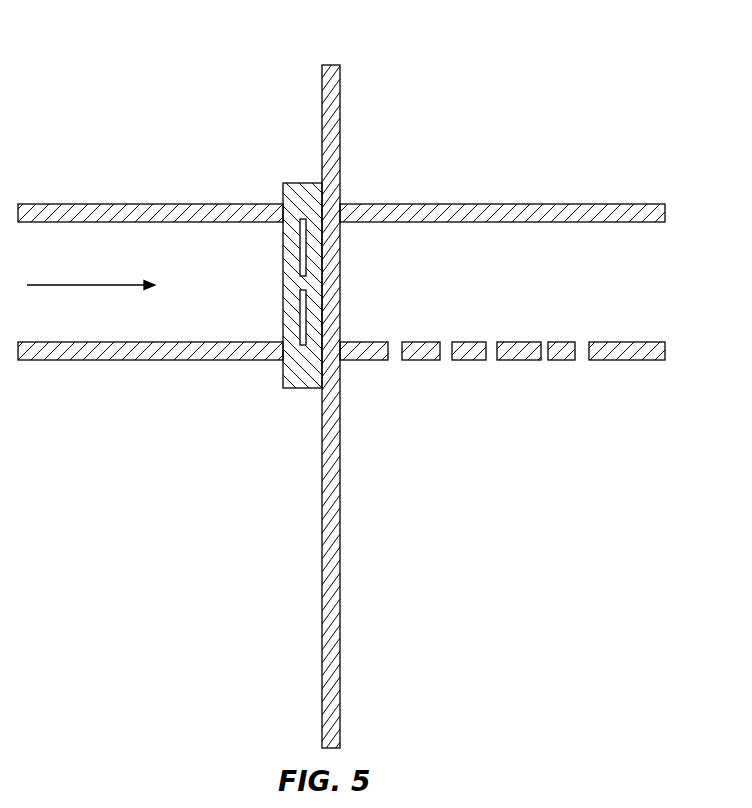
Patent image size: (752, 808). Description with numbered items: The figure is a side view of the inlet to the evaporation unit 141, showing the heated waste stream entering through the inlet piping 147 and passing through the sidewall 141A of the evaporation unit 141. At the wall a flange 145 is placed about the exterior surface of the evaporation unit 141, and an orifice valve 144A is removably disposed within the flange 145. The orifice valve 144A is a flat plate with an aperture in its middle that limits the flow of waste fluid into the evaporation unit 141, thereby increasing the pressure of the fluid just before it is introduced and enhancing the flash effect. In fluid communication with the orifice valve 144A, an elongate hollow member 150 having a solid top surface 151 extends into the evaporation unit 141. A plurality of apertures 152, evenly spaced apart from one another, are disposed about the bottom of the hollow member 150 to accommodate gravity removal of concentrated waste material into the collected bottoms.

The evaporation unit 141 is at (300, 415).
The sidewall 141A is at (331, 88).
The orifice valve 144A is at (283, 323).
The flange 145 is at (297, 282).
The inlet piping 147 is at (339, 382).
The elongate hollow member 150 is at (339, 184).
The solid top surface 151 is at (422, 213).
The apertures 152 is at (445, 363).